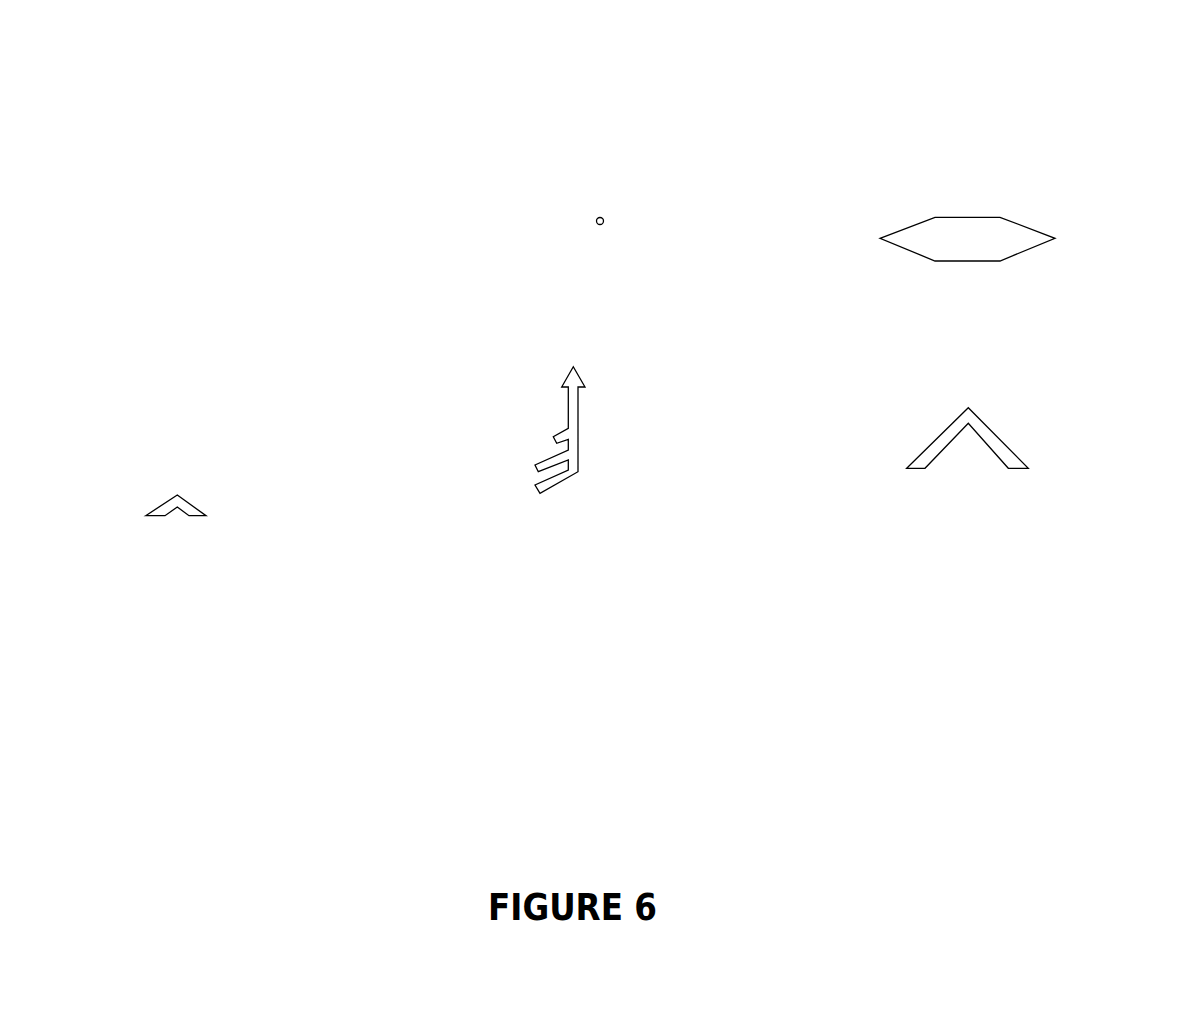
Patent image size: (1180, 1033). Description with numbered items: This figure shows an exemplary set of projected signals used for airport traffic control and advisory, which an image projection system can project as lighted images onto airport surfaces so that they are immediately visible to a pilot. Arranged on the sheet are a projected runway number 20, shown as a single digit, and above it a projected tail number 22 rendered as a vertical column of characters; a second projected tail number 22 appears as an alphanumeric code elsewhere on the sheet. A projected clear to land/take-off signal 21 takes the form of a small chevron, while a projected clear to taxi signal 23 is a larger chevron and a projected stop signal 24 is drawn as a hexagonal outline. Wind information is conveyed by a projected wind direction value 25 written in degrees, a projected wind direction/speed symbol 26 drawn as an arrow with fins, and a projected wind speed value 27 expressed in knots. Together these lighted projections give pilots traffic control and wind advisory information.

The projected runway number 20 is at (193, 595).
The projected clear to land/take-off signal 21 is at (196, 503).
The projected tail number 22 is at (197, 222).
The projected clear to taxi signal 23 is at (1003, 440).
The projected stop signal 24 is at (1027, 227).
The projected wind direction value 25 is at (598, 238).
The projected wind direction/speed symbol 26 is at (578, 435).
The projected wind speed value 27 is at (622, 597).